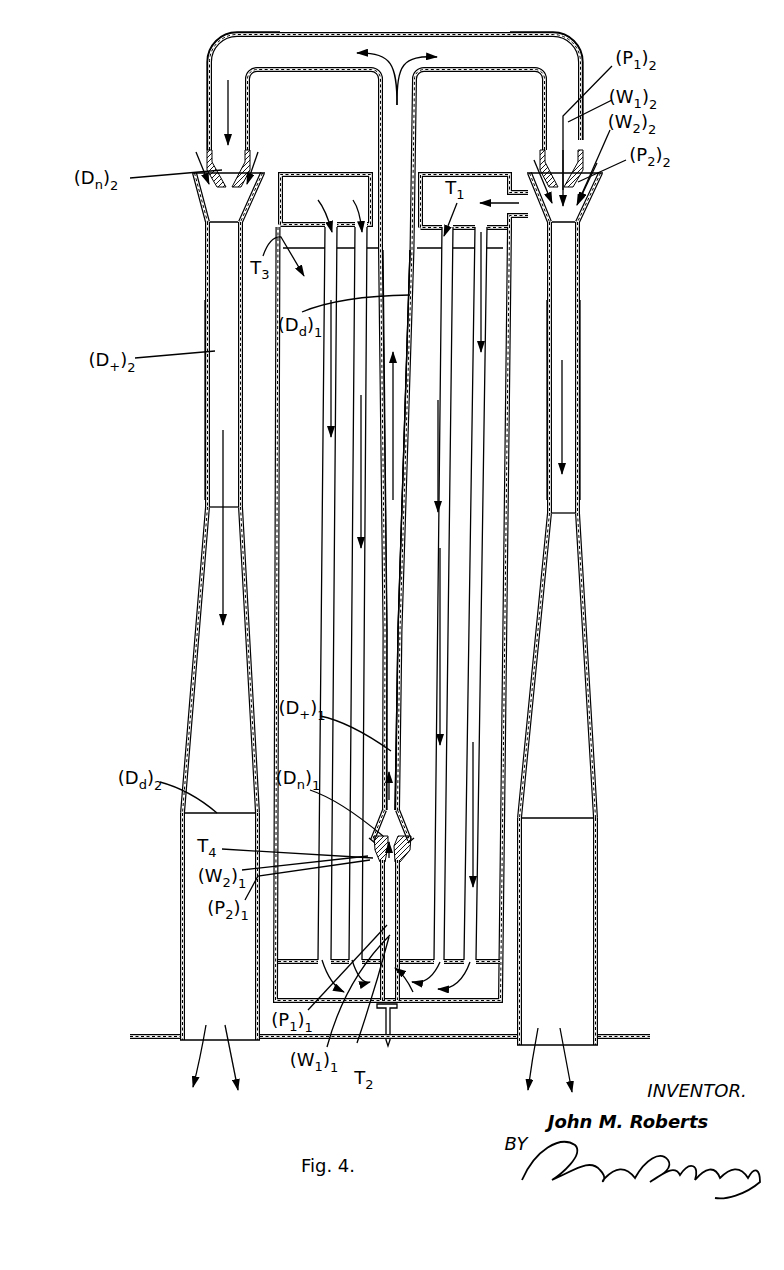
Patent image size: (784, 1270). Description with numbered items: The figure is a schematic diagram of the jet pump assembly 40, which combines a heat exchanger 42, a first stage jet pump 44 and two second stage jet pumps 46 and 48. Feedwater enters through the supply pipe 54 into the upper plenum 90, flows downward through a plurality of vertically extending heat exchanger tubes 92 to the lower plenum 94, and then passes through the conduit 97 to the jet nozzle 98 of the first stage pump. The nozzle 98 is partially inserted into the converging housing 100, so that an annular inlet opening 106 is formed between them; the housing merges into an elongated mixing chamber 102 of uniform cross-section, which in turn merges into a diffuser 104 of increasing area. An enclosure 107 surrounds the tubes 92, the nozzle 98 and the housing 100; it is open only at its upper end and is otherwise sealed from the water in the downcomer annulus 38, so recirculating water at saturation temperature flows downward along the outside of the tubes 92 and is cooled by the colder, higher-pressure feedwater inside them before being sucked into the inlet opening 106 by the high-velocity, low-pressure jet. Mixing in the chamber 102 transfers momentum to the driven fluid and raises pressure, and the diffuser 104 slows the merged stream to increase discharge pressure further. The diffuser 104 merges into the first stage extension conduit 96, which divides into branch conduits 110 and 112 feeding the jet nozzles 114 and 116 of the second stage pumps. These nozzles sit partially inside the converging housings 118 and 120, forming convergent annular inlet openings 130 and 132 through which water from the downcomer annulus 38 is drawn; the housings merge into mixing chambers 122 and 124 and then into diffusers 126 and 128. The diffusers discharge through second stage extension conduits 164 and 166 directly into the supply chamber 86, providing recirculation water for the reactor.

The downcomer annulus 38 is at (630, 468).
The jet pump assembly 40 is at (586, 50).
The heat exchanger 42 is at (330, 172).
The first stage jet pump 44 is at (411, 478).
The second stage jet pump 46 is at (688, 96).
The second stage jet pump 48 is at (183, 110).
The supply pipe 54 is at (492, 273).
The supply chamber 86 is at (418, 1119).
The upper plenum 90 is at (475, 185).
The heat exchanger tubes 92 is at (482, 688).
The lower plenum 94 is at (407, 1010).
The first stage extension conduit 96 is at (382, 118).
The conduit 97 is at (400, 905).
The jet nozzle 98 is at (412, 858).
The converging housing 100 is at (412, 809).
The mixing chamber 102 is at (455, 597).
The diffuser 104 is at (410, 402).
The inlet opening 106 is at (412, 836).
The enclosure 107 is at (508, 318).
The branch conduit 110 is at (420, 36).
The branch conduit 112 is at (226, 45).
The jet nozzle 114 is at (603, 181).
The jet nozzle 116 is at (210, 158).
The converging housing 118 is at (578, 229).
The converging housing 120 is at (207, 218).
The mixing chamber 122 is at (583, 350).
The mixing chamber 124 is at (207, 390).
The diffuser 126 is at (582, 548).
The diffuser 128 is at (197, 613).
The inlet opening 130 is at (576, 210).
The inlet opening 132 is at (212, 196).
The second stage extension conduit 164 is at (598, 955).
The second stage extension conduit 166 is at (180, 830).